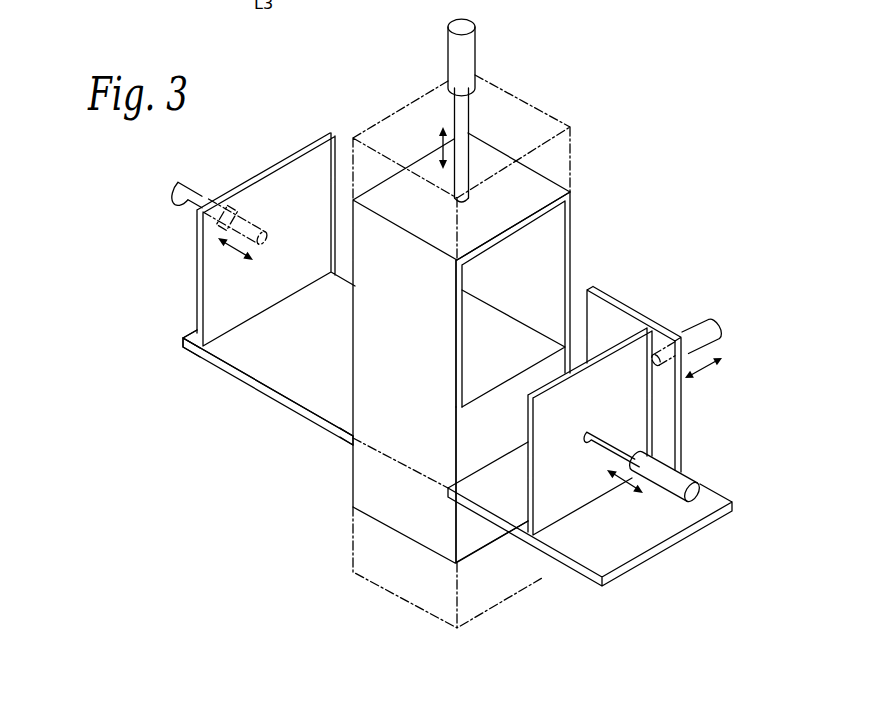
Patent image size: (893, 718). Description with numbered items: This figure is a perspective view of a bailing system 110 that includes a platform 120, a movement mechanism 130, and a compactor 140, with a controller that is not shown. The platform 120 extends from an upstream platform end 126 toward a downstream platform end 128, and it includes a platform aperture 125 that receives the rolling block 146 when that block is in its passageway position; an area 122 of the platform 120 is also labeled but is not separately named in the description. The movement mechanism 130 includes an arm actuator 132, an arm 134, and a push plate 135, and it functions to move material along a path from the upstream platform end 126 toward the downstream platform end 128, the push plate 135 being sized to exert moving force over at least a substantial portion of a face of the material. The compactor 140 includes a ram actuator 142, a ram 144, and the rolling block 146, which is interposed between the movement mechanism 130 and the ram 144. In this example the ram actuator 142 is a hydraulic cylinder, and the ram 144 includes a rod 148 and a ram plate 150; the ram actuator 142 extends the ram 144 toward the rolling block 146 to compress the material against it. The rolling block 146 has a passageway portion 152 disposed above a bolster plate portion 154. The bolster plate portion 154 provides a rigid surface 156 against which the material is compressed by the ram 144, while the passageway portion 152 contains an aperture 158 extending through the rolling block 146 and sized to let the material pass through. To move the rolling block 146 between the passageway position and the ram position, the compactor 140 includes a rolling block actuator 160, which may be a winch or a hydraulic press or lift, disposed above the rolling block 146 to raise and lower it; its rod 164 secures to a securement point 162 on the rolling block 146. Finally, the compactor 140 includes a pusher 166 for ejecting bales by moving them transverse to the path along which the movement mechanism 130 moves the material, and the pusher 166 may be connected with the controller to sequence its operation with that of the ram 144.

The bailing system 110 is at (133, 252).
The platform 120 is at (283, 357).
The top surface of base plate 122 is at (337, 370).
The platform aperture 125 is at (352, 437).
The upstream platform end 126 is at (183, 337).
The downstream platform end 128 is at (653, 553).
The movement mechanism 130 is at (203, 201).
The arm actuator 132 is at (208, 193).
The arm 134 is at (267, 222).
The push plate 135 is at (257, 301).
The compactor 140 is at (663, 452).
The ram actuator 142 is at (683, 480).
The ram 144 is at (584, 466).
The rolling block 146 is at (495, 348).
The rod 148 is at (617, 444).
The ram plate 150 is at (633, 398).
The passageway portion 152 is at (572, 232).
The bolster plate portion 154 is at (513, 427).
The rigid surface 156 is at (500, 456).
The aperture 158 is at (550, 250).
The rolling block actuator 160 is at (478, 48).
The contact tip 162 is at (463, 203).
The rod 164 is at (473, 108).
The pusher 166 is at (684, 291).